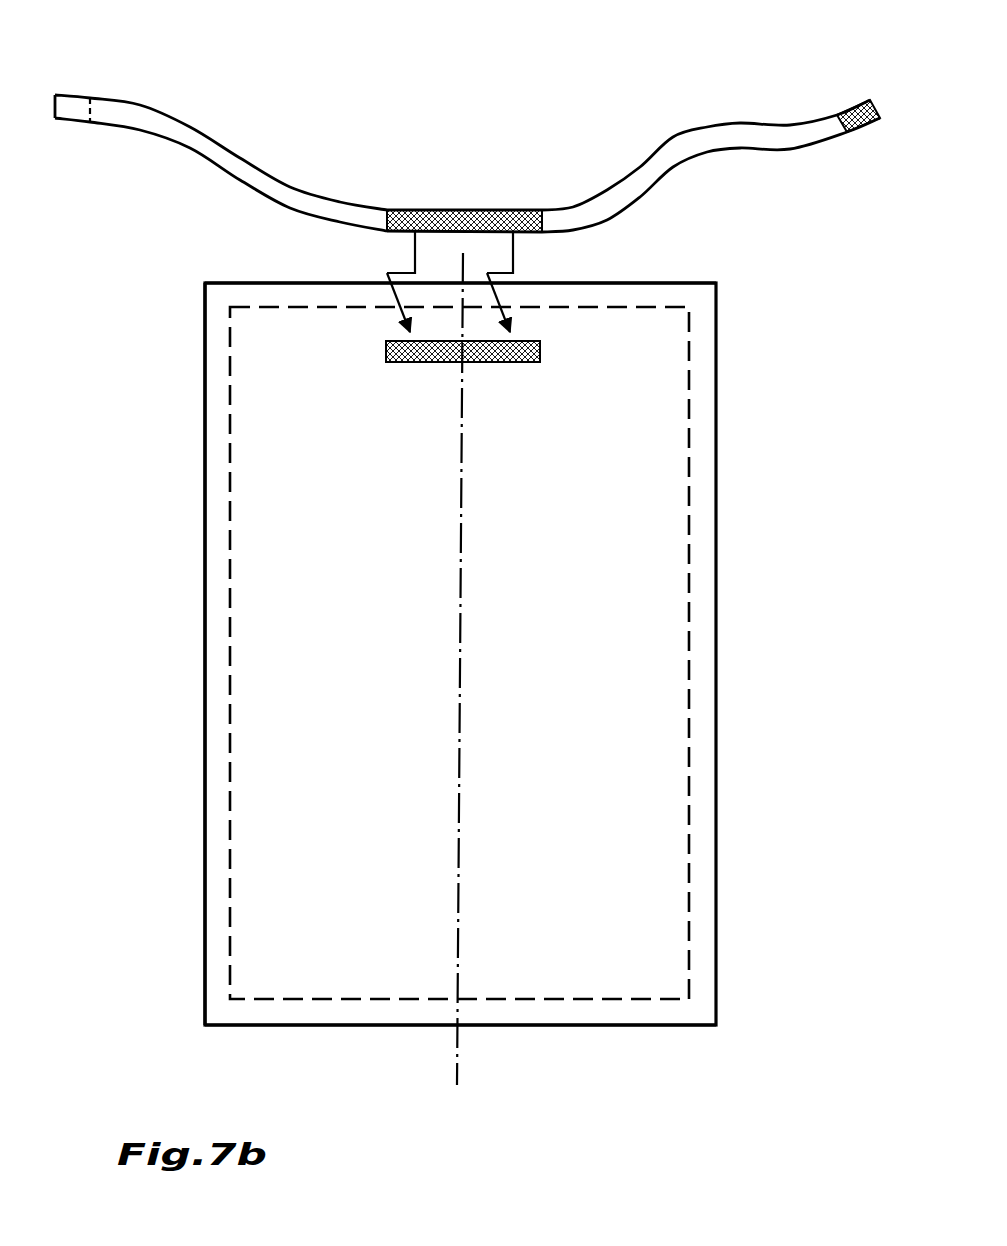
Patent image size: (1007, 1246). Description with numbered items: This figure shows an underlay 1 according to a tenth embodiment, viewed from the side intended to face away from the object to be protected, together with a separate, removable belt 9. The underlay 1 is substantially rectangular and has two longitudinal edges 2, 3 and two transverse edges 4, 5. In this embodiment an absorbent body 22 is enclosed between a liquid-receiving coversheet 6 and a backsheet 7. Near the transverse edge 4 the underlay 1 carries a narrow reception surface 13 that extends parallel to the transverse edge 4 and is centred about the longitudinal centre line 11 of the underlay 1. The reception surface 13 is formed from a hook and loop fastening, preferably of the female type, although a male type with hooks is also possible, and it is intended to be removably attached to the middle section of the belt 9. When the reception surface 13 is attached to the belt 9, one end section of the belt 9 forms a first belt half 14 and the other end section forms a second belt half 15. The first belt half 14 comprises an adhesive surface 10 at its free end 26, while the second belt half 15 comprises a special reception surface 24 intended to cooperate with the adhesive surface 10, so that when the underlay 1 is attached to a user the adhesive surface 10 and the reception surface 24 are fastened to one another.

The underlay 1 is at (158, 361).
The longitudinal edge 2 is at (716, 695).
The longitudinal edge 3 is at (206, 553).
The transverse edge 4 is at (320, 282).
The transverse edge 5 is at (530, 1027).
The liquid-receiving coversheet 6 is at (647, 807).
The backsheet 7 is at (665, 912).
The belt 9 is at (192, 140).
The adhesive surface 10 is at (857, 128).
The longitudinal centre line 11 is at (457, 1056).
The reception surface 13 is at (527, 341).
The first belt half 14 is at (671, 129).
The second belt half 15 is at (246, 139).
The absorbent body 22 is at (687, 510).
The reception surface 24 is at (74, 110).
The free end 26 is at (878, 108).